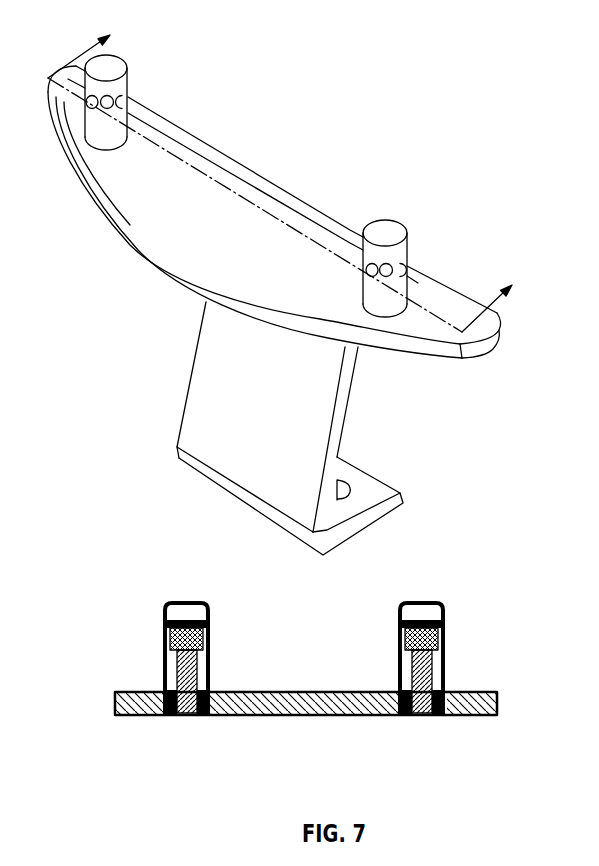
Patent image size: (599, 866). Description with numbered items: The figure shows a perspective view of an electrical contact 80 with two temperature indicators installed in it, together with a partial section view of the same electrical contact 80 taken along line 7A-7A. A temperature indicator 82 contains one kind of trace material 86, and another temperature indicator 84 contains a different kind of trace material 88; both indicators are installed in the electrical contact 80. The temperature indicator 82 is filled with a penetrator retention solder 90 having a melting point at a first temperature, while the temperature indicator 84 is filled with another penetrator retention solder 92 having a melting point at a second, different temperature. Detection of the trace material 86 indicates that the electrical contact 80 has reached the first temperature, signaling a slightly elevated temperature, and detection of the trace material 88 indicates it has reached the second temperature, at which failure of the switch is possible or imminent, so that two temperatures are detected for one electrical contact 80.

The electrical contact 80 is at (222, 222).
The temperature indicator 82 is at (259, 470).
The temperature indicator 84 is at (332, 394).
The trace material 86 is at (167, 603).
The trace material 88 is at (441, 604).
The penetrator retention solder 90 is at (170, 713).
The penetrator retention solder 92 is at (440, 713).
The section line 7A- 7A is at (295, 170).